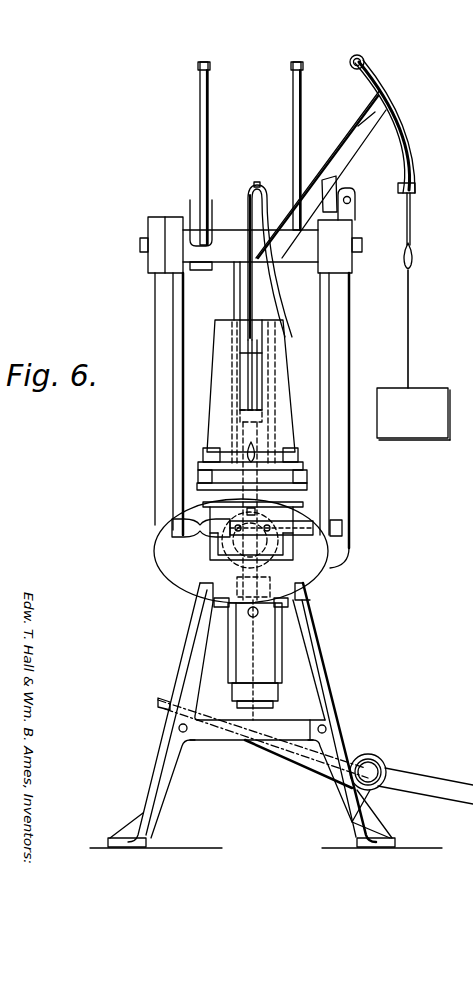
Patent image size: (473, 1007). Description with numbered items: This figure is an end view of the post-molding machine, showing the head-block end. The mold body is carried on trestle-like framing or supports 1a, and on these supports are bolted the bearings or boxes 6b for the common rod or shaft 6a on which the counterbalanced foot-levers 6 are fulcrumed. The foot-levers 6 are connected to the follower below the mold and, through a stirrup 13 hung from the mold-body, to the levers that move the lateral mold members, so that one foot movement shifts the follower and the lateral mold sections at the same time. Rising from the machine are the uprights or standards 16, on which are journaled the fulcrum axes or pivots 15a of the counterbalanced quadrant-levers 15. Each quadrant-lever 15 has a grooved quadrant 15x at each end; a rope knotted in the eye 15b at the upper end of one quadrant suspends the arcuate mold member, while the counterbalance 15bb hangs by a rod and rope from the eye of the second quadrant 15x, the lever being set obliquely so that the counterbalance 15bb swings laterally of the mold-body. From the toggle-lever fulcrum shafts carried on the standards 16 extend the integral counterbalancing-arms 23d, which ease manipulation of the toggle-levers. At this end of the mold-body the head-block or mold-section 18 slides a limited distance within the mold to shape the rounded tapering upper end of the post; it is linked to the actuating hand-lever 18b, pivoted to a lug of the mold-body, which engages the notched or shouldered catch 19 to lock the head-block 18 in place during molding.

The counterbalancing-arm 23d is at (208, 165).
The upright or standard 16 is at (152, 414).
The quadrant-lever 15 is at (345, 168).
The grooved quadrant 15x is at (411, 163).
The fulcrum axis or pivot 15a is at (410, 288).
The eye 15b is at (355, 66).
The counterbalance 15bb is at (421, 420).
The head-block or mold-section 18 is at (280, 553).
The actuating hand-lever 18b is at (215, 512).
The notched or shouldered catch 19 is at (212, 547).
The trestle-like framing or support 1a is at (302, 650).
The stirrup 13 is at (278, 688).
The counterbalanced foot-lever 6 is at (302, 752).
The rod or shaft 6a is at (371, 770).
The bearing or box 6b is at (386, 777).